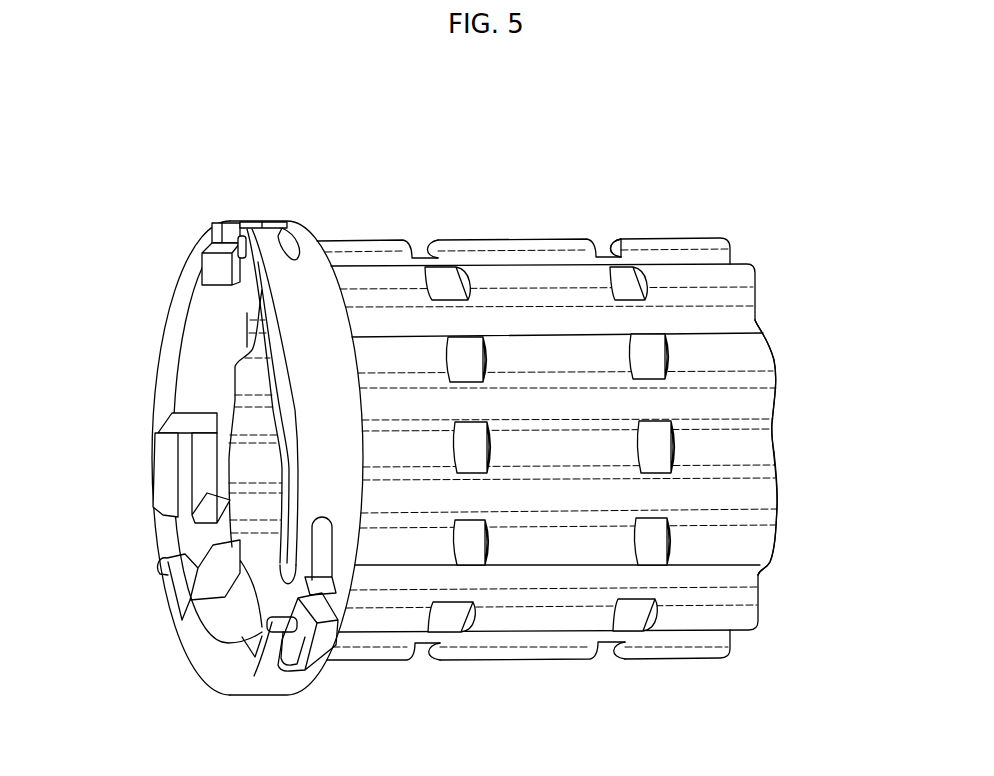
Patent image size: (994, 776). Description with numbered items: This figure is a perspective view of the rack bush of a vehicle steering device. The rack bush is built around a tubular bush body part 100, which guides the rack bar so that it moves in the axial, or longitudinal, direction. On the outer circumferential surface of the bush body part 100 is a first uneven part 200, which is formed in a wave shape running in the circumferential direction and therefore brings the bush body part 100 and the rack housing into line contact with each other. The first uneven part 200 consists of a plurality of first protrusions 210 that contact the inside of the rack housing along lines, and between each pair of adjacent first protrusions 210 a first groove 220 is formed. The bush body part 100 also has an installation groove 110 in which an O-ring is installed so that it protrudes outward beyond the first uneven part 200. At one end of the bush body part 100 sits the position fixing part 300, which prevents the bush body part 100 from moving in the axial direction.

The bush body part 100 is at (350, 241).
The installation groove 110 is at (614, 248).
The first uneven part 200 is at (857, 437).
The first protrusions 210 is at (763, 443).
The first groove 220 is at (757, 487).
The position fixing part 300 is at (172, 285).